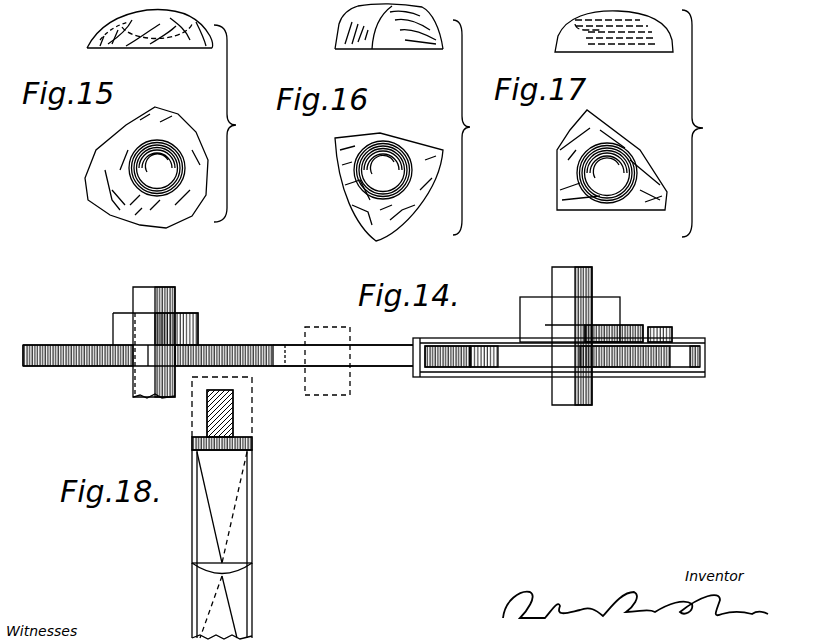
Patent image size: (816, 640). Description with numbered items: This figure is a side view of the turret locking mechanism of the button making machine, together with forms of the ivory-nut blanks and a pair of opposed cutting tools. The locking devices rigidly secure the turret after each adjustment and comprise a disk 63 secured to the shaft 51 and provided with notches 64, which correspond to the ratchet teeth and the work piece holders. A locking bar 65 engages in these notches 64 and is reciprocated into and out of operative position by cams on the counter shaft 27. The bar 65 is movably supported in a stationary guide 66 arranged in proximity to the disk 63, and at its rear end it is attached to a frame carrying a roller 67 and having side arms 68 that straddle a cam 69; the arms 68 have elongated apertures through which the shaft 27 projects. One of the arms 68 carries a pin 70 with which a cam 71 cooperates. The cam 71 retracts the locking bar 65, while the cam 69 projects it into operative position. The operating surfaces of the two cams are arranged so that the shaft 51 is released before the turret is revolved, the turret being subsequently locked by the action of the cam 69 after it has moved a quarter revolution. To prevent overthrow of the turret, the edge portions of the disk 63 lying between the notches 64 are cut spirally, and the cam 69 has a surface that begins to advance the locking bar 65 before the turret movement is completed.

The counter shaft 27 is at (580, 284).
The shaft 51 is at (172, 301).
The disk 63 is at (66, 345).
The notches 64 is at (140, 358).
The locking bar 65 is at (381, 358).
The stationary guide 66 is at (319, 334).
The roller 67 is at (444, 360).
The side arms 68 is at (488, 343).
The cam 69 is at (539, 358).
The pin 70 is at (662, 331).
The cam 71 is at (618, 334).